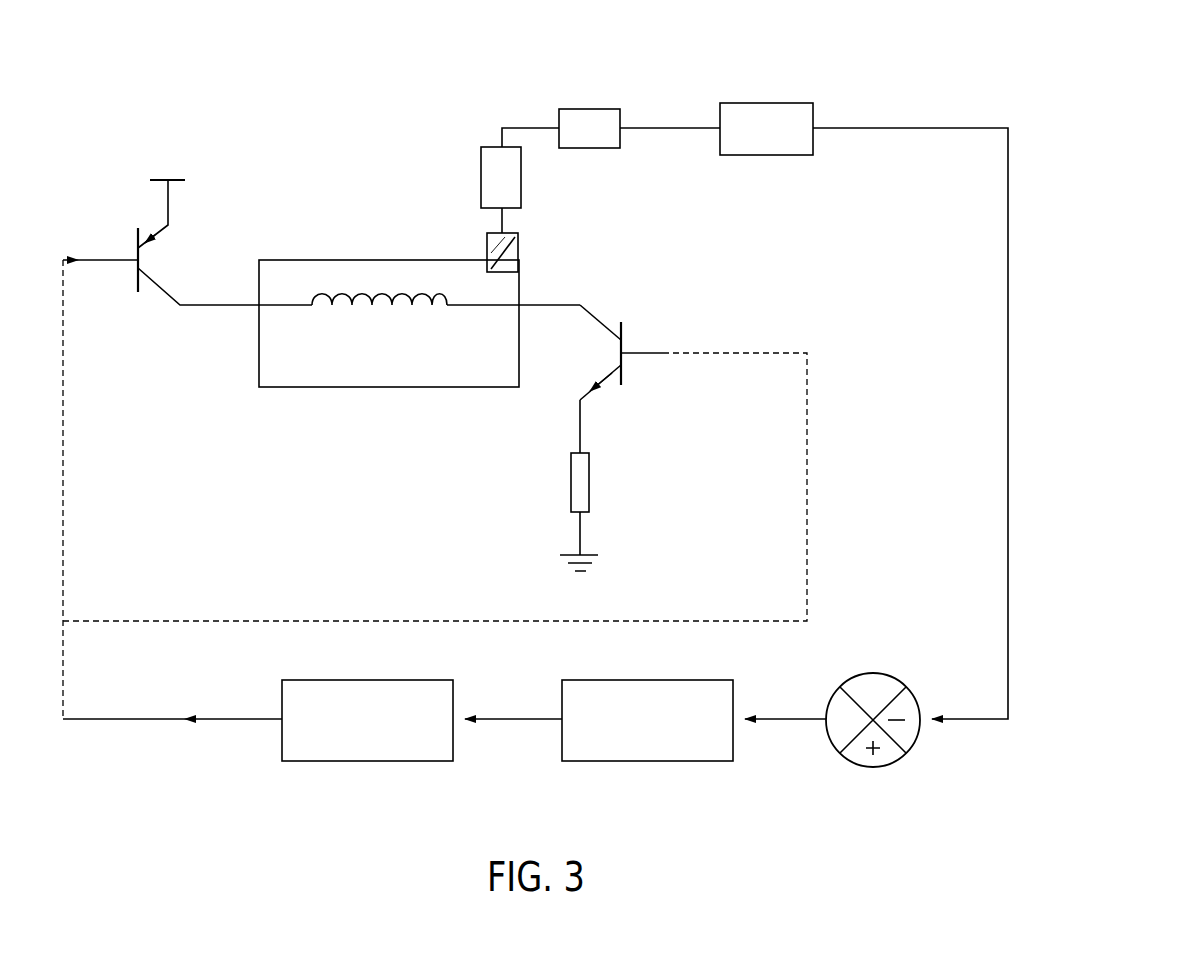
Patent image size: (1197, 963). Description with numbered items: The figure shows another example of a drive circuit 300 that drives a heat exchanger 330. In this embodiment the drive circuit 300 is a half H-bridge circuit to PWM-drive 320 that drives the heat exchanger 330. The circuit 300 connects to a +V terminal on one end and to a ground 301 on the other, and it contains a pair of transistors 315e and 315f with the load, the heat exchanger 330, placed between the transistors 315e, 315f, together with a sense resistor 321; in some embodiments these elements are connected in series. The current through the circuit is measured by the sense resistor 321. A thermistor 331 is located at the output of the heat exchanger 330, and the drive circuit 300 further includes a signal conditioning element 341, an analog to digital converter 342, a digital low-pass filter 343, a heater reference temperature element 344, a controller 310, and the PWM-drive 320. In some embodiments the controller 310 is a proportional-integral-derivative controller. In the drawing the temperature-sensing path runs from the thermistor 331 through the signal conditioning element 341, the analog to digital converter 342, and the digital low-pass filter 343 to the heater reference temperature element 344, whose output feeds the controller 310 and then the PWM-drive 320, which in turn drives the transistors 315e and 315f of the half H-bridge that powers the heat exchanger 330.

The drive circuit 300 is at (1114, 120).
The ground 301 is at (565, 553).
The controller 310 is at (646, 762).
The transistor 315e is at (168, 178).
The transistor 315f is at (622, 333).
The PWM-drive 320 is at (365, 762).
The sense resistor 321 is at (589, 480).
The heat exchanger 330 is at (375, 258).
The thermistor 331 is at (520, 245).
The signal conditioning element 341 is at (495, 140).
The analog to digital converter 342 is at (592, 108).
The digital low-pass filter 343 is at (765, 156).
The heater reference temperature element 344 is at (873, 768).